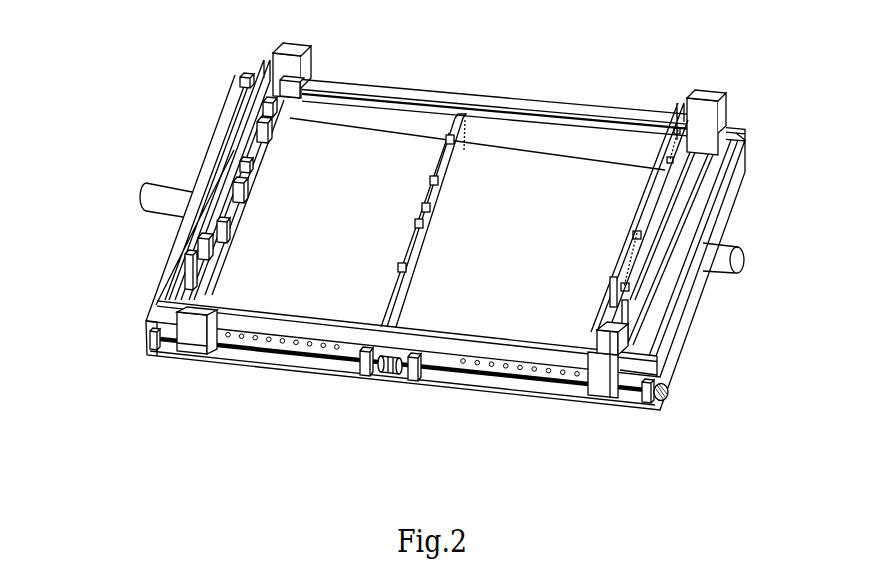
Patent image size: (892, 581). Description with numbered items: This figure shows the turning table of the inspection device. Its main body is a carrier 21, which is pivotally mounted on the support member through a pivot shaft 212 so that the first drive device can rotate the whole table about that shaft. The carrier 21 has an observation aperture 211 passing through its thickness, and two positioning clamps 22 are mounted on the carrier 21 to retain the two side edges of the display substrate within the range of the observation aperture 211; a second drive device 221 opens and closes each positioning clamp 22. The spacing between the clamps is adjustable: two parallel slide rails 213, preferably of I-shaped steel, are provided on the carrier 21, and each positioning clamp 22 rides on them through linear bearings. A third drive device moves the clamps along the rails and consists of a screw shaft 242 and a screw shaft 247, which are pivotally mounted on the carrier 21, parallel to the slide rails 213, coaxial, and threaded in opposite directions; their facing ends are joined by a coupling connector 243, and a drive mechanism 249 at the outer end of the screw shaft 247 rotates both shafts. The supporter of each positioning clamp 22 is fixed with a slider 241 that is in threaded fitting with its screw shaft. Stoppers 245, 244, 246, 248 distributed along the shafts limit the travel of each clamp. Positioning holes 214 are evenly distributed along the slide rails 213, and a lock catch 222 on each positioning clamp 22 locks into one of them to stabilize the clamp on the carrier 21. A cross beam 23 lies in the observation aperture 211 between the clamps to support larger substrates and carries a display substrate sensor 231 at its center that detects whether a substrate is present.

The carrier 21 is at (740, 170).
The observation aperture 211 is at (527, 170).
The pivot shaft 212 is at (713, 250).
The slide rail 213 is at (611, 118).
The positioning hole 214 is at (537, 358).
The positioning clamp 22 is at (243, 147).
The second drive device 221 is at (630, 243).
The lock catch 222 is at (580, 357).
The cross beam 23 is at (412, 240).
The display substrate sensor 231 is at (422, 199).
The slider 241 is at (198, 350).
The screw shaft 242 is at (302, 352).
The coupling connector 243 is at (380, 370).
The stopper 244 is at (358, 373).
The stopper 245 is at (147, 342).
The stopper 246 is at (412, 373).
The screw shaft 247 is at (477, 378).
The stopper 248 is at (640, 400).
The drive mechanism 249 is at (657, 400).